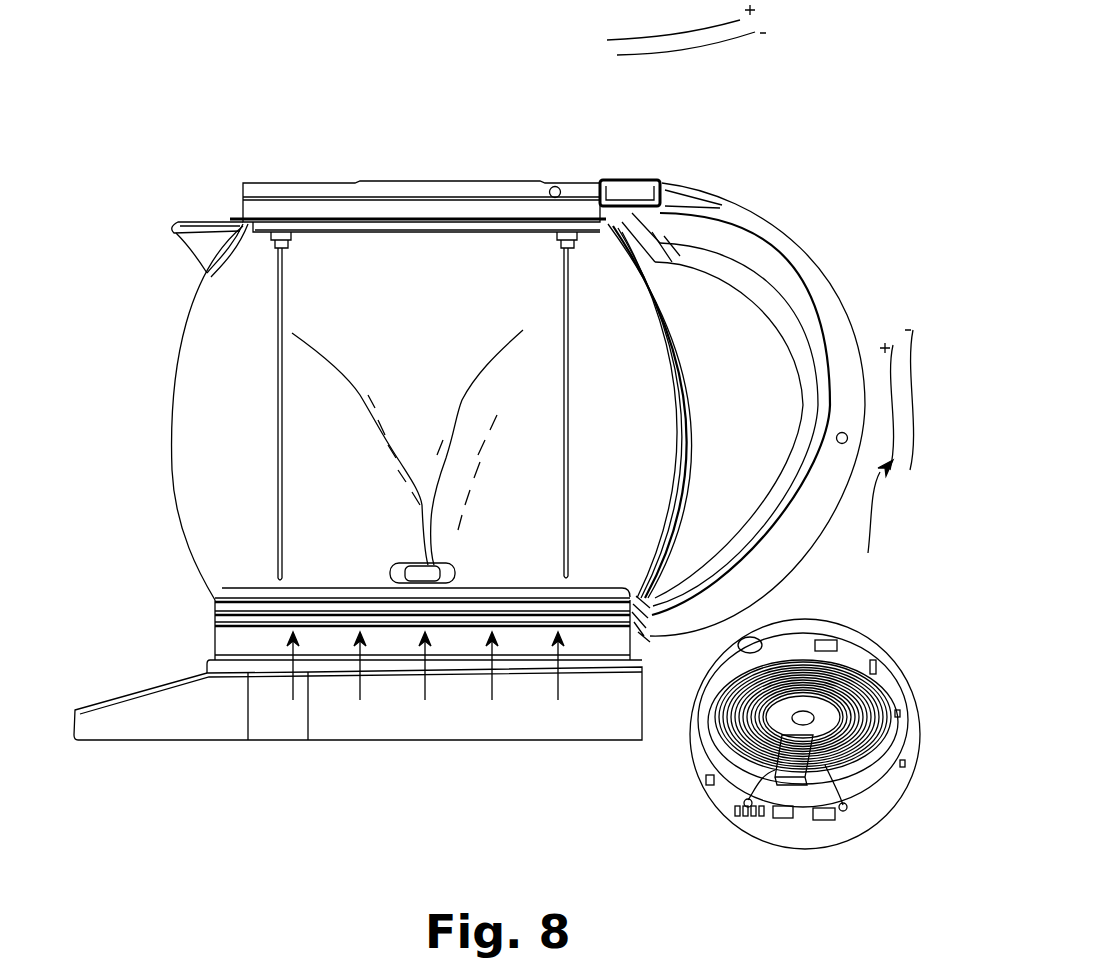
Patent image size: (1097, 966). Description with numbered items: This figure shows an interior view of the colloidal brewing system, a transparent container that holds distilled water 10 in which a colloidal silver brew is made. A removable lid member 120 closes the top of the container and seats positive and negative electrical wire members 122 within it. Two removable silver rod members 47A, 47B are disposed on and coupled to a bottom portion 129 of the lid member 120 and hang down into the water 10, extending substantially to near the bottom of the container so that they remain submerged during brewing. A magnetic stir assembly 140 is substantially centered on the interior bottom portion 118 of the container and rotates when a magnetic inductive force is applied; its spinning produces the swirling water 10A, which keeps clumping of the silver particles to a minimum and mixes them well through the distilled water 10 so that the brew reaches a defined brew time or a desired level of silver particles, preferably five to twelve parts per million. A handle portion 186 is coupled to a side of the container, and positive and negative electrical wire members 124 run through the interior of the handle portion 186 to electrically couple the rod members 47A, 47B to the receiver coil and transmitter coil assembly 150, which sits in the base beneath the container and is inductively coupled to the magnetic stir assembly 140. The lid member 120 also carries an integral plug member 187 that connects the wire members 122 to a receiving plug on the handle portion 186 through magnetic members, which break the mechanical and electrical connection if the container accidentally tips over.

The distilled water 10 is at (217, 562).
The swirling water 10A is at (453, 428).
The silver rod member 47A is at (277, 435).
The silver rod member 47B is at (570, 348).
The interior bottom portion 118 is at (585, 583).
The lid member 120 is at (252, 183).
The electrical wire members 122 is at (554, 186).
The electrical wire members 124 is at (842, 445).
The bottom portion of the lid member 129 is at (323, 234).
The magnetic stir assembly 140 is at (395, 572).
The receiver coil and transmitter coil assembly 150 is at (680, 782).
The handle portion 186 is at (725, 205).
The integral plug member 187 is at (653, 180).